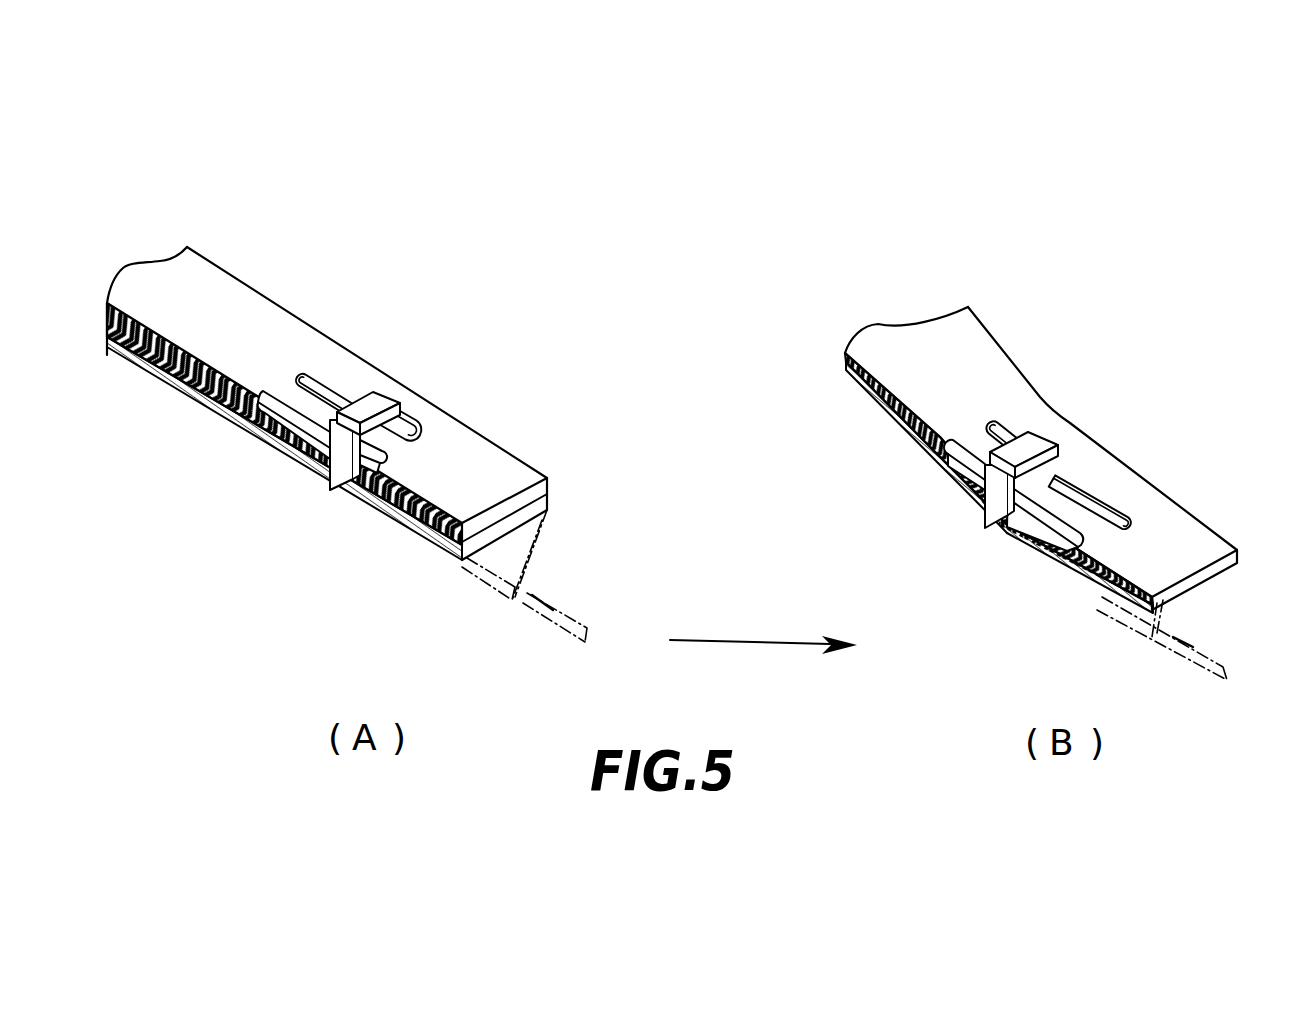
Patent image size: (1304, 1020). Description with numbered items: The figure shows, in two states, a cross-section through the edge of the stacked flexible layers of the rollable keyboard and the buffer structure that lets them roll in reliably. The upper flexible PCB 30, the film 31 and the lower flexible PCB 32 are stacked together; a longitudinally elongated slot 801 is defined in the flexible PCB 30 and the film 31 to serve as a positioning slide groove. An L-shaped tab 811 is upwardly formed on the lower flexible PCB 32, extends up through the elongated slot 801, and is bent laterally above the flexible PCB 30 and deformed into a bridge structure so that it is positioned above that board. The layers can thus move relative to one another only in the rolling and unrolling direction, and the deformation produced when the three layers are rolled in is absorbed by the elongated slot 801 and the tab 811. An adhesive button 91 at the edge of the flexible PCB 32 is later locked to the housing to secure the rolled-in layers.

In FIG. 5A, the flexible PCB 30 is at (182, 347).
In FIG. 5B, the flexible PCB 30 is at (880, 360).
In FIG. 5A, the film 31 is at (140, 360).
In FIG. 5B, the film 31 is at (857, 383).
In FIG. 5A, the flexible PCB 32 is at (197, 400).
In FIG. 5B, the flexible PCB 32 is at (898, 430).
In FIG. 5A, the elongated slot 801 is at (277, 393).
In FIG. 5B, the elongated slot 801 is at (952, 442).
In FIG. 5A, the L-shaped tab 811 is at (374, 415).
In FIG. 5B, the L-shaped tab 811 is at (1028, 478).
In FIG. 5A, the adhesive button 91 is at (553, 607).
In FIG. 5B, the adhesive button 91 is at (1200, 643).